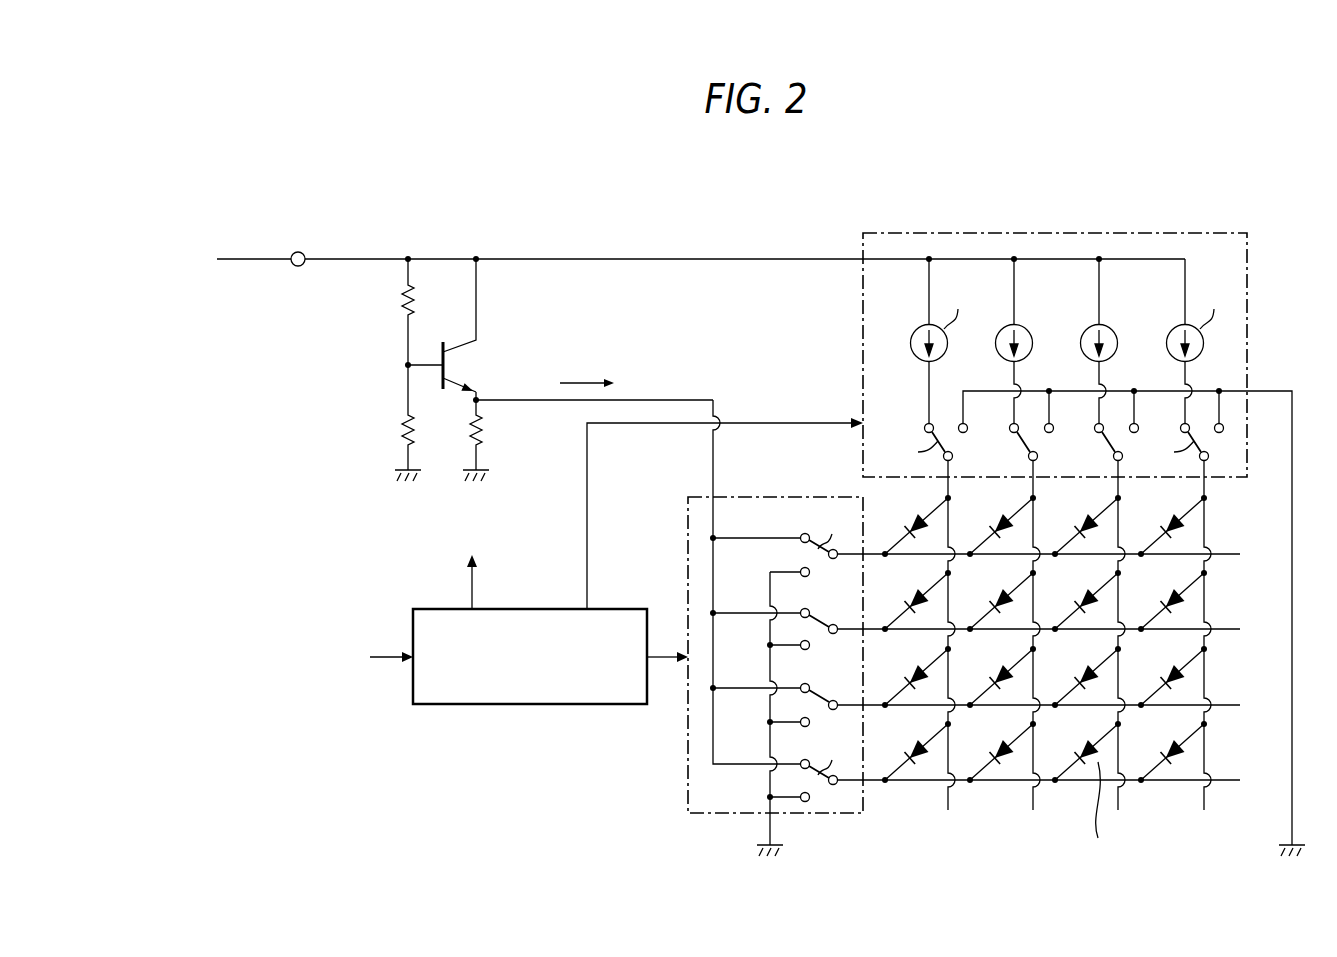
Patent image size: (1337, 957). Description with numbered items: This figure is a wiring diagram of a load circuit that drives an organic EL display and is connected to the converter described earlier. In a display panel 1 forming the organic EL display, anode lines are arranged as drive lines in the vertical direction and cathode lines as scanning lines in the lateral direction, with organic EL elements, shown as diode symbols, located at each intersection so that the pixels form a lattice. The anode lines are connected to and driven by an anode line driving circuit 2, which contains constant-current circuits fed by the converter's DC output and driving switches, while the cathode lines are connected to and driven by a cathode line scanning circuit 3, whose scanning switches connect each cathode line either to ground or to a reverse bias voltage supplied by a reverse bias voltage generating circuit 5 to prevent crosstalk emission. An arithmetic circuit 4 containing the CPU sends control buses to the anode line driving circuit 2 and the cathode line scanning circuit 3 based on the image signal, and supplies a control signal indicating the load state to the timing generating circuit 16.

The display panel 1 is at (988, 878).
The anode line driving circuit 2 is at (1054, 233).
The cathode line scanning circuit 3 is at (780, 497).
The arithmetic circuit 4 is at (617, 609).
The reverse bias voltage generating circuit 5 is at (492, 244).
The timing generating circuit 16 is at (472, 568).